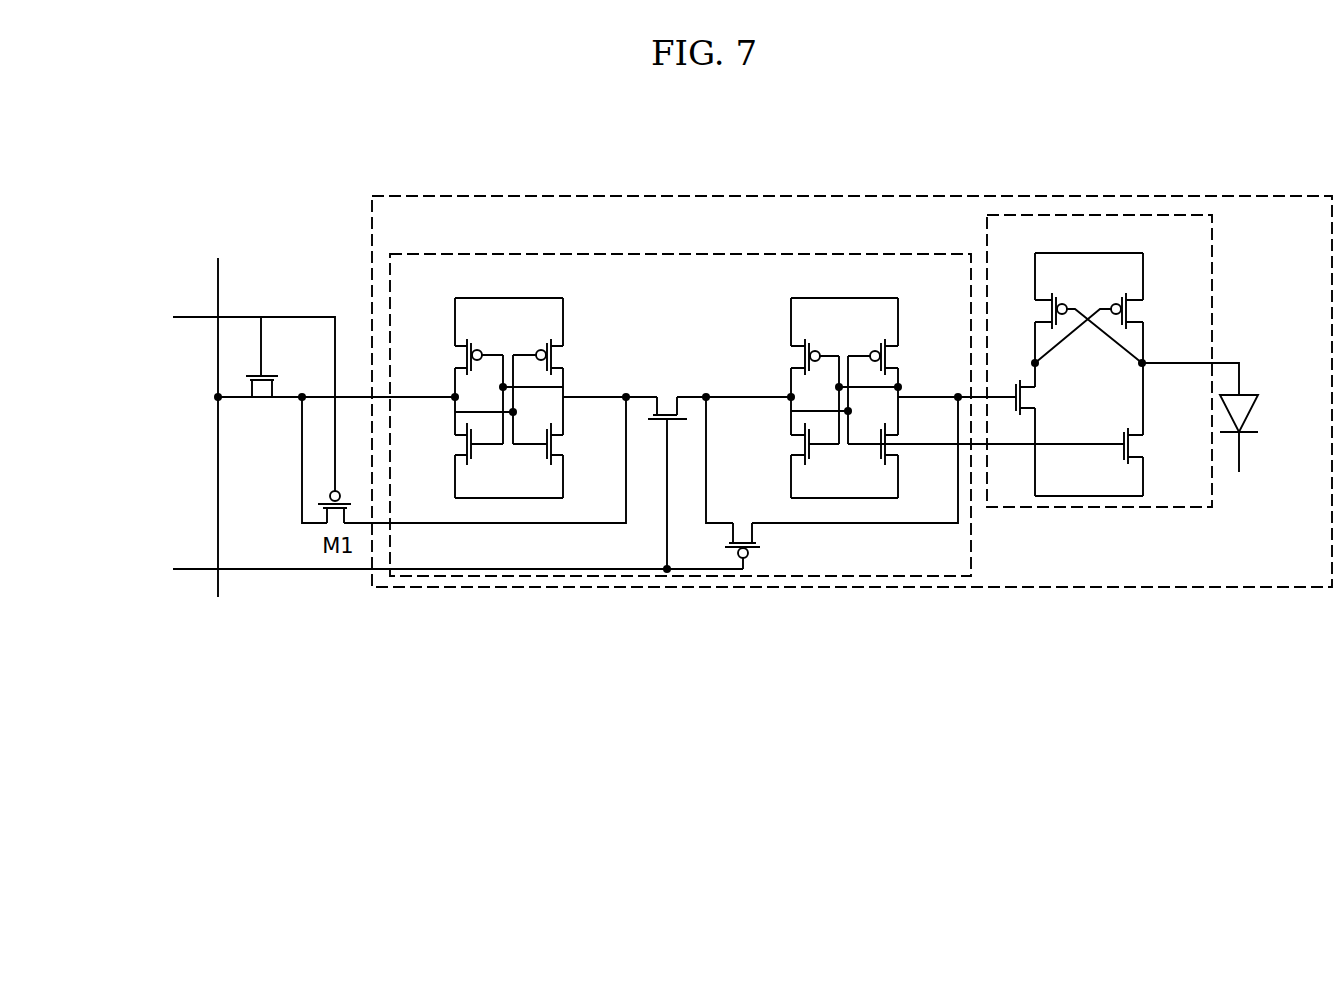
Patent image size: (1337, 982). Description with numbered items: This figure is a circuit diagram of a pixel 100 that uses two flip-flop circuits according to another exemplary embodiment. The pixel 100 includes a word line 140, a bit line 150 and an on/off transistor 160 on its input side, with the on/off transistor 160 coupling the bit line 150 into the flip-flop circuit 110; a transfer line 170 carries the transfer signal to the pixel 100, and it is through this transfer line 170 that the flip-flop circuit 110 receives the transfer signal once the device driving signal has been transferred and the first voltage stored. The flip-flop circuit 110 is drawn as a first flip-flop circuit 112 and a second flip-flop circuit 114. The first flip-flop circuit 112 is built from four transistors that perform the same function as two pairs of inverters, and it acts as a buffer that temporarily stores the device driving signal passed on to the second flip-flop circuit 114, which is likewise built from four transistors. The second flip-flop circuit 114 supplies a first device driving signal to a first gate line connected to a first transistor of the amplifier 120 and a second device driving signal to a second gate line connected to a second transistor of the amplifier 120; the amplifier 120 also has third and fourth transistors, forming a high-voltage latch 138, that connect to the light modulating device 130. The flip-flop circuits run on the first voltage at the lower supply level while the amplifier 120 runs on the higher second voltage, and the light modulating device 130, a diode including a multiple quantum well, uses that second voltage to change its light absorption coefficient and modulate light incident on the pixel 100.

The pixel 100 is at (905, 196).
The flip-flop circuit 110 is at (685, 254).
The first flip-flop circuit 112 is at (310, 599).
The second flip-flop circuit 114 is at (963, 599).
The amplifier 120 is at (1158, 507).
The light modulating device 130 is at (1255, 392).
The high-voltage latch 138 is at (1143, 275).
The word line 140 is at (218, 358).
The bit line 150 is at (220, 276).
The on/off transistor 160 is at (274, 370).
The transfer line 170 is at (206, 571).